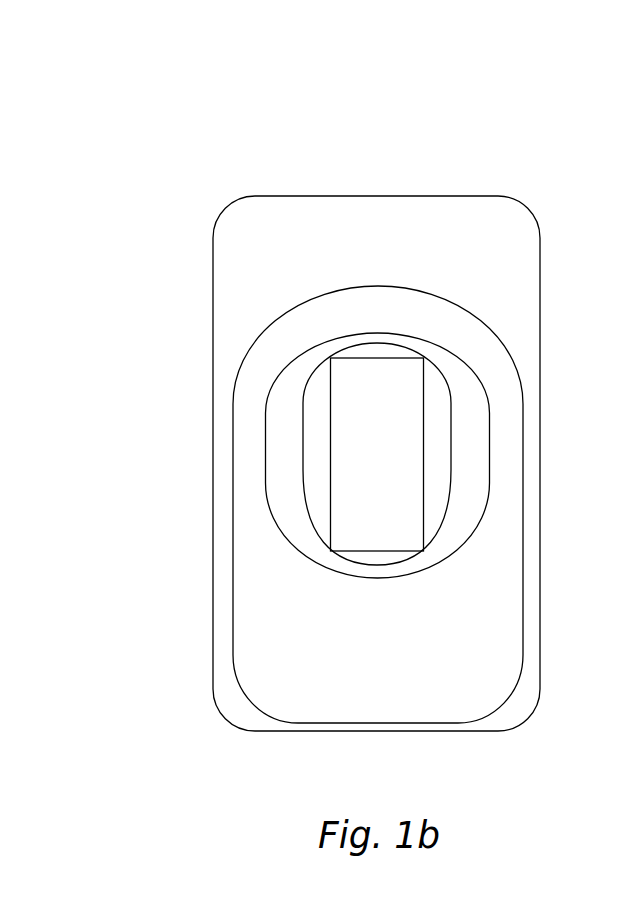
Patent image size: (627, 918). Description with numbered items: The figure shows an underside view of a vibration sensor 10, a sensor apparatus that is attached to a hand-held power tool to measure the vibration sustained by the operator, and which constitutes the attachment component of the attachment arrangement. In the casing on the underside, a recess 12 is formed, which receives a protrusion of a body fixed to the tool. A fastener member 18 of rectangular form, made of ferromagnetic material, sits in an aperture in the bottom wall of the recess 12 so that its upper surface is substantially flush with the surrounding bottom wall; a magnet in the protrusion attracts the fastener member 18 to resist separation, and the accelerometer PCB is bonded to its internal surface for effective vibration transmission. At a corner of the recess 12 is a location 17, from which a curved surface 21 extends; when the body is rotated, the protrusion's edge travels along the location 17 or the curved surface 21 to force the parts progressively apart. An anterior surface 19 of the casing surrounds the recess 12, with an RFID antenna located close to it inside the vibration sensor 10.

The vibration sensor 10 is at (406, 136).
The recess 12 is at (467, 457).
The location 17 is at (266, 403).
The fastener member 18 is at (399, 508).
The anterior surface 19 is at (480, 357).
The curved surface 21 is at (350, 333).